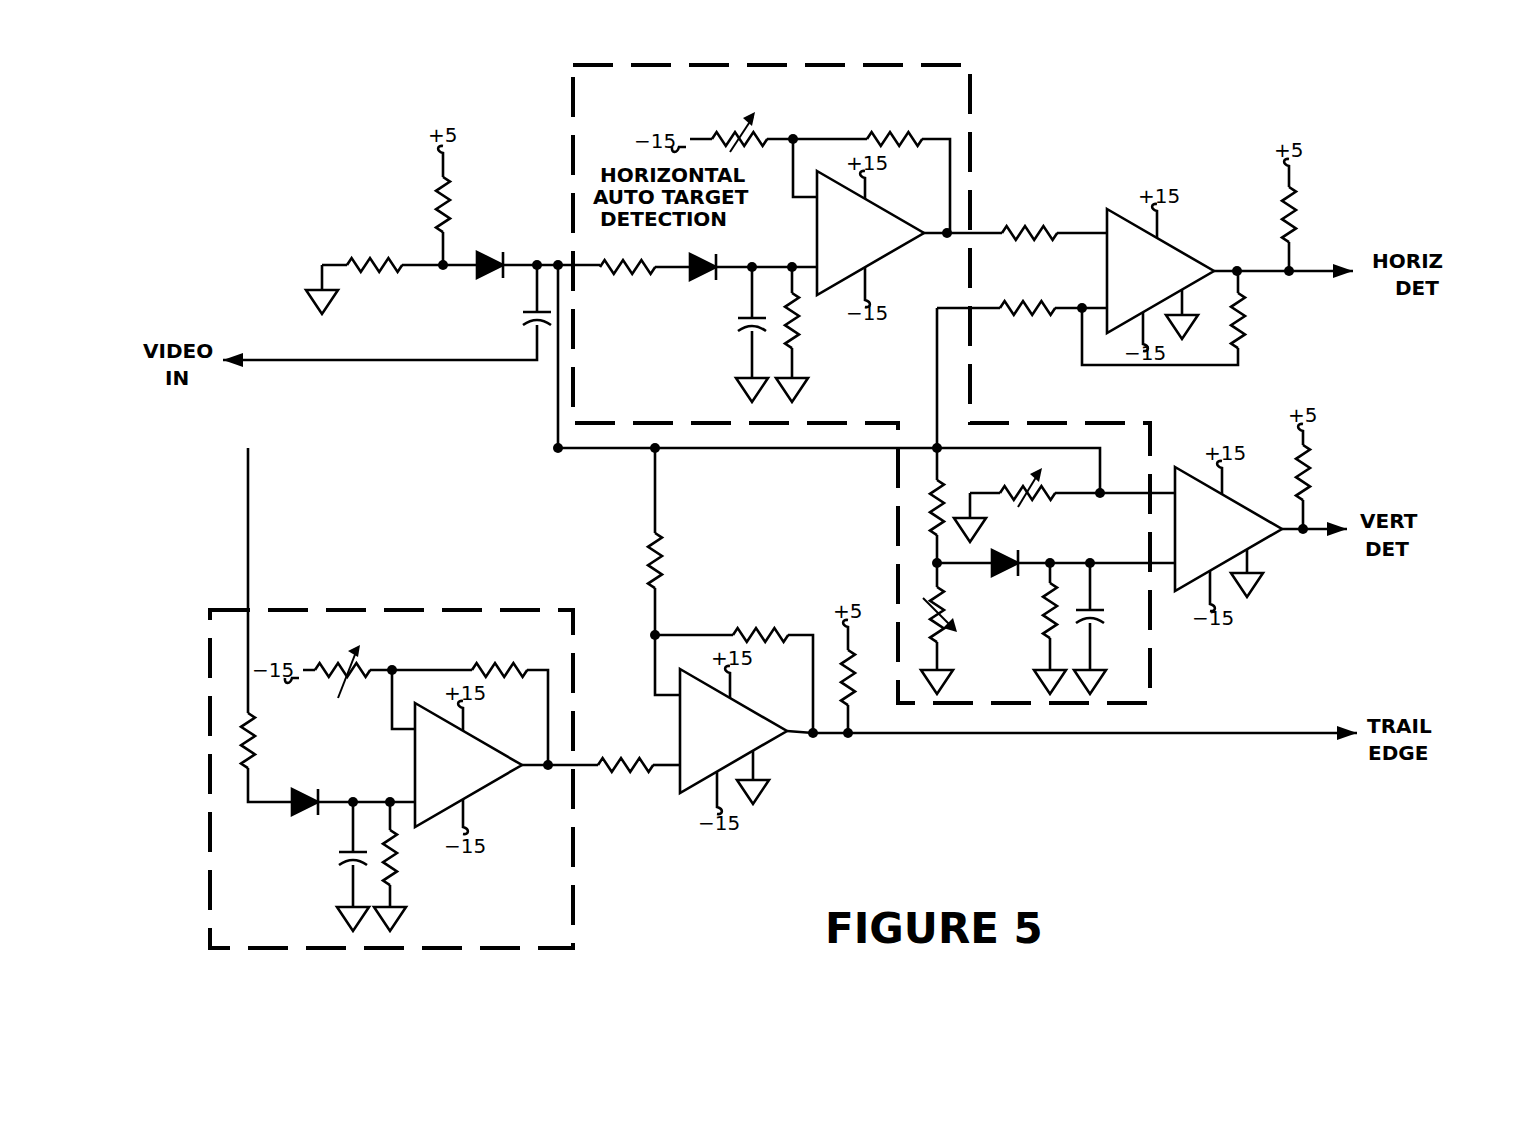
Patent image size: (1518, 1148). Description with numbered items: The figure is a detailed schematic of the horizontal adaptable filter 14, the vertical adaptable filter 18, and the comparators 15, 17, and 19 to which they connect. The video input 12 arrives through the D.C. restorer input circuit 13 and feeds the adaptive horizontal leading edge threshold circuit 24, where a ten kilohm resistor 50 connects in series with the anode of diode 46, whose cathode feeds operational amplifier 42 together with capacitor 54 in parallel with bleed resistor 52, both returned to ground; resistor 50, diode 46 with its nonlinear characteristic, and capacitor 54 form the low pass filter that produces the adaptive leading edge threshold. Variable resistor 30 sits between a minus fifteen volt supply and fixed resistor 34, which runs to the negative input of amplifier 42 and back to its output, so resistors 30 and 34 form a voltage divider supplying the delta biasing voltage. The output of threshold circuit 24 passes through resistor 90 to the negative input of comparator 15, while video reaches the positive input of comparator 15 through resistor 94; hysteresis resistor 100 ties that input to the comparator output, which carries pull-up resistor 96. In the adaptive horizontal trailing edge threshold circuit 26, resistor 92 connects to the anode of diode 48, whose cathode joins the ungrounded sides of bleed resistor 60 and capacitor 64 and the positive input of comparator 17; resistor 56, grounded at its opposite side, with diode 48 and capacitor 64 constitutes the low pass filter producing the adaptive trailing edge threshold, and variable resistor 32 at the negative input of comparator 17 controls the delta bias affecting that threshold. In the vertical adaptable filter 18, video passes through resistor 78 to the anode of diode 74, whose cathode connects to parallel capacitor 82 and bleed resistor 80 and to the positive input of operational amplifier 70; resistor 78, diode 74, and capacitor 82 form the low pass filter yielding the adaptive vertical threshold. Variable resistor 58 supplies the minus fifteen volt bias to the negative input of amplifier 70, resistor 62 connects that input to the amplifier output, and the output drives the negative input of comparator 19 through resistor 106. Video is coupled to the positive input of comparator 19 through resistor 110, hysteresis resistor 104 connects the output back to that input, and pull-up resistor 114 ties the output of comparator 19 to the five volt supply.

The video input 12 is at (556, 260).
The D.C. restorer input circuit 13 is at (375, 230).
The horizontal adaptable filter 14 is at (976, 112).
The leading edge comparator 15 is at (1180, 250).
The trailing edge comparator 17 is at (1260, 545).
The trailing edge detection circuit 18 is at (370, 608).
The vertical comparator 19 is at (770, 750).
The adaptive horizontal leading edge threshold circuit 24 is at (818, 363).
The adaptive horizontal trailing edge threshold circuit 26 is at (1060, 475).
The variable resistor 30 is at (737, 130).
The variable resistor 32 is at (1050, 500).
The fixed resistor 34 is at (877, 128).
The operational amplifier 42 is at (882, 207).
The diode 46 is at (705, 280).
The diode 48 is at (1010, 555).
The resistor 50 is at (632, 275).
The bleed resistor 52 is at (800, 320).
The capacitor 54 is at (745, 330).
The resistor 56 is at (957, 612).
The variable resistor 58 is at (338, 685).
The bleed resistor 60 is at (1045, 625).
The resistor 62 is at (490, 660).
The capacitor 64 is at (1097, 612).
The operational amplifier 70 is at (493, 787).
The diode 74 is at (292, 810).
The resistor 78 is at (262, 765).
The bleed resistor 80 is at (398, 862).
The capacitor 82 is at (345, 868).
The resistor 90 is at (1020, 228).
The resistor 92 is at (945, 485).
The resistor 94 is at (1030, 315).
The pull-up resistor 96 is at (1297, 212).
The hysteresis resistor 100 is at (1246, 338).
The hysteresis resistor 104 is at (755, 625).
The resistor 106 is at (625, 758).
The resistor 110 is at (672, 540).
The pull-up resistor 114 is at (855, 697).